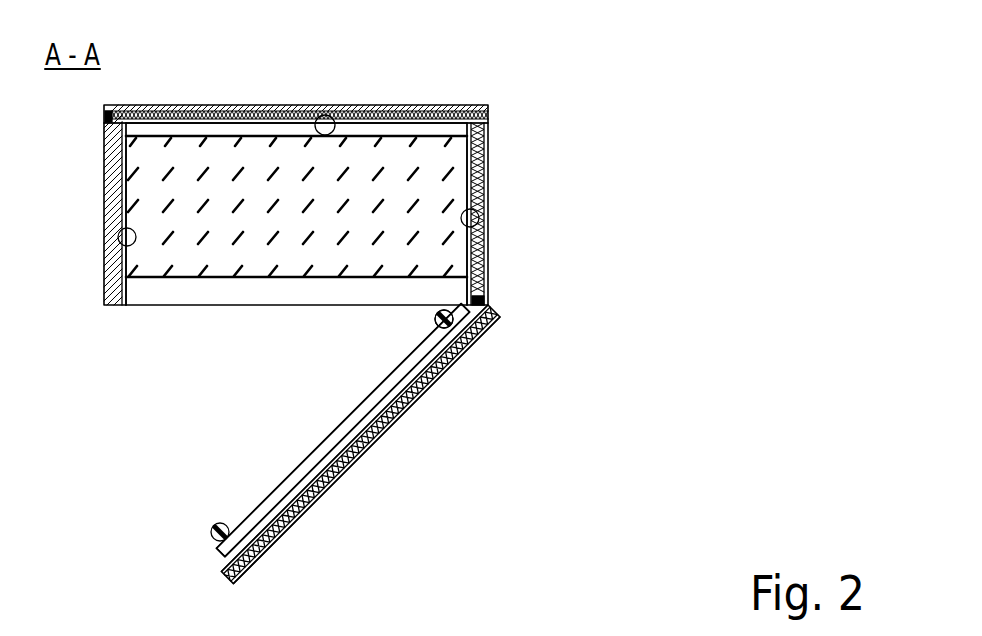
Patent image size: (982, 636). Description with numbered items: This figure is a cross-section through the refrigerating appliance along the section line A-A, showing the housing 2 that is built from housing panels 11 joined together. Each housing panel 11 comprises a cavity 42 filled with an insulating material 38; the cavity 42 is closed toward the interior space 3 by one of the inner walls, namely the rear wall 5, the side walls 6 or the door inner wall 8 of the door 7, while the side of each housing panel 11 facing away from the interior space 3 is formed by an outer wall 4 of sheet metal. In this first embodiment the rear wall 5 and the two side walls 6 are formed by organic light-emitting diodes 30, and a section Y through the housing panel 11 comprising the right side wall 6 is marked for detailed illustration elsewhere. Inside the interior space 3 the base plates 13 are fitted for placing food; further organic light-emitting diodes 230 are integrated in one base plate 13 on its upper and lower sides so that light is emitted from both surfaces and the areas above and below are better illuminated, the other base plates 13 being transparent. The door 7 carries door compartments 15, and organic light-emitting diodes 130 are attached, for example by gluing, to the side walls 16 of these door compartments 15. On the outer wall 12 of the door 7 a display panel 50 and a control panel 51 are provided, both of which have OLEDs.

The housing 2 is at (500, 82).
The interior space 3 is at (425, 175).
The outer wall 4 is at (450, 128).
The rear wall 5 is at (228, 124).
The side wall 6 is at (453, 238).
The door 7 is at (357, 470).
The door inner wall 8 is at (348, 437).
The housing panel 11 is at (148, 105).
The outer wall of the door 12 is at (445, 377).
The base plate 13 is at (288, 182).
The door compartment 15 is at (292, 478).
The side wall of the door compartment 16 is at (436, 320).
The organic light-emitting diode 30 is at (326, 114).
The insulating material 38 is at (236, 110).
The cavity 42 is at (187, 110).
The display panel 50 is at (360, 459).
The control panel 51 is at (290, 527).
The organic light-emitting diode 130 is at (467, 350).
The organic light-emitting diode 230 is at (377, 162).